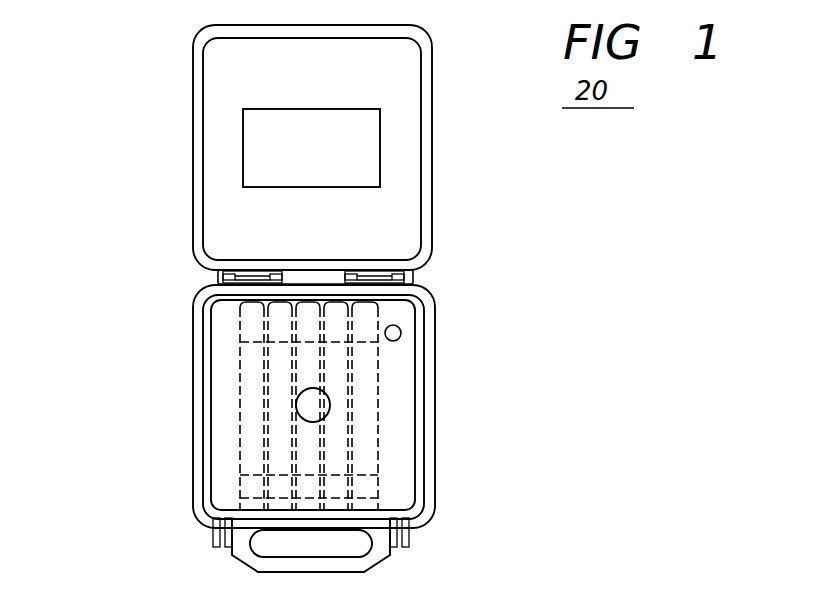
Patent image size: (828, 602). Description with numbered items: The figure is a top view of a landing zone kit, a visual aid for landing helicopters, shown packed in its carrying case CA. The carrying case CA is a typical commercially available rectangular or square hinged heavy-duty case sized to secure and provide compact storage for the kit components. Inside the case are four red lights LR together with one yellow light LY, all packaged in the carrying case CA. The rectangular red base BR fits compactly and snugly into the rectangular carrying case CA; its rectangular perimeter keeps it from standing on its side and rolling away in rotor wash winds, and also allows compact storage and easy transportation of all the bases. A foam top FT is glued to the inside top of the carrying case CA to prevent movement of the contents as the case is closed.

The carrying case CA is at (427, 213).
The foam top FT is at (253, 122).
The red light LR is at (377, 398).
The red base BR is at (406, 313).
The yellow light LY is at (253, 442).